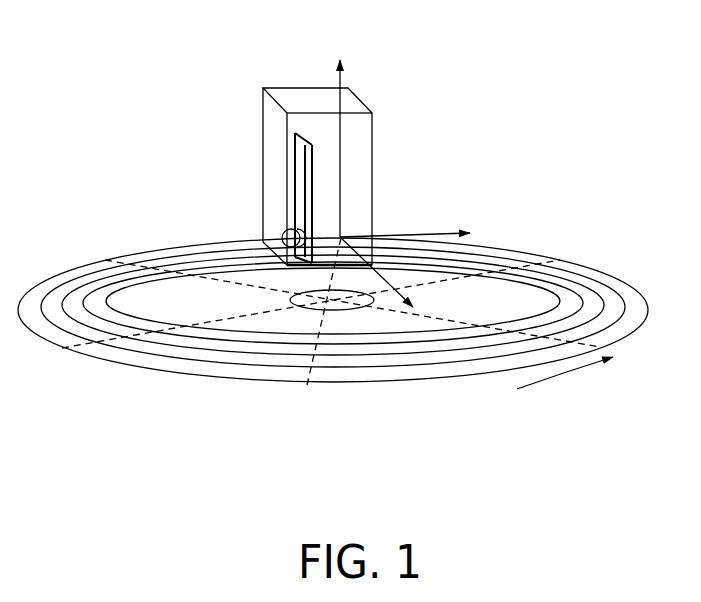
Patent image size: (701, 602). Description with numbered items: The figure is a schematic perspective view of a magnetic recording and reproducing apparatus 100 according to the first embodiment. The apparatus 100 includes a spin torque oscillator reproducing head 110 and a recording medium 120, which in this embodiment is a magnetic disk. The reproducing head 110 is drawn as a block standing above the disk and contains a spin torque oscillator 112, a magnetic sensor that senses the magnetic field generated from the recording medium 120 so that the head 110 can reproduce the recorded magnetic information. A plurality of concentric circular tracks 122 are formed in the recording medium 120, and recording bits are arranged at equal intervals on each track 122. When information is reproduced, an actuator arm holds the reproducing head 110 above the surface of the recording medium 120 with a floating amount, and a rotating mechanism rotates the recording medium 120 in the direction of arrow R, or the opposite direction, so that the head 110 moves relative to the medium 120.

The magnetic recording and reproducing apparatus 100 is at (200, 78).
The spin torque oscillator reproducing head 110 is at (374, 127).
The spin torque oscillator 112 is at (314, 206).
The recording medium 120 is at (608, 292).
The tracks 122 is at (333, 338).